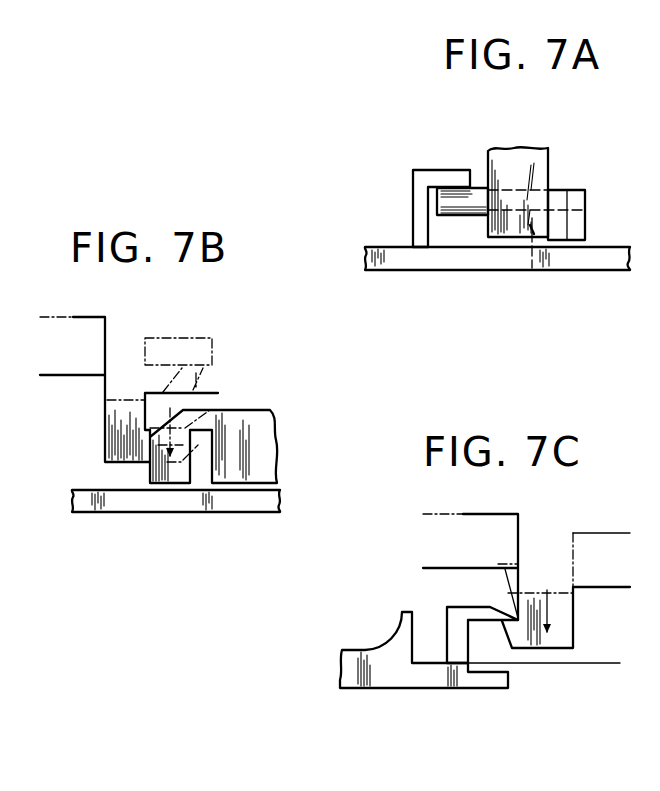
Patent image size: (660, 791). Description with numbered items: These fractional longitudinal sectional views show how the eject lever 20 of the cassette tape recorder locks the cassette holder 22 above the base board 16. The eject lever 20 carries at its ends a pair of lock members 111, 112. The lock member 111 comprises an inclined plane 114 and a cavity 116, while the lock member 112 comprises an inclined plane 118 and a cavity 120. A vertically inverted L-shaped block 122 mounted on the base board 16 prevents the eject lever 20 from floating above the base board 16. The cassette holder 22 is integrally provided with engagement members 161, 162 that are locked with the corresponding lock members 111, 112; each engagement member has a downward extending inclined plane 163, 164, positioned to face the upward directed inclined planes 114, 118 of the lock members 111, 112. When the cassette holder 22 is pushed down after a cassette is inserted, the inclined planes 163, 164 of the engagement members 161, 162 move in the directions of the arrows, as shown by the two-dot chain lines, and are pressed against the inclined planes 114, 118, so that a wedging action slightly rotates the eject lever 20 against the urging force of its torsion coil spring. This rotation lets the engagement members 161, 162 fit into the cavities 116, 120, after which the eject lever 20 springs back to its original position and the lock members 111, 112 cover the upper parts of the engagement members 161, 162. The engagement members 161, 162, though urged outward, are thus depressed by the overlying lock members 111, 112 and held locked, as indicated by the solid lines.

In FIG. 7A, the base board 16 is at (574, 272).
In FIG. 7B, the base board 16 is at (176, 515).
In FIG. 7C, the base board 16 is at (429, 694).
In FIG. 7A, the eject lever 20 is at (588, 217).
In FIG. 7B, the eject lever 20 is at (276, 454).
In FIG. 7A, the cassette holder 22 is at (510, 148).
In FIG. 7B, the cassette holder 22 is at (132, 358).
In FIG. 7C, the cassette holder 22 is at (557, 567).
In FIG. 7A, the lock member 111 is at (567, 194).
In FIG. 7B, the lock member 111 is at (226, 407).
In FIG. 7C, the lock member 112 is at (424, 599).
In FIG. 7A, the inclined plane 114 is at (454, 198).
In FIG. 7B, the inclined plane 114 is at (163, 431).
In FIG. 7A, the cavity 116 is at (480, 241).
In FIG. 7C, the inclined plane 118 is at (504, 612).
In FIG. 7C, the cavity 120 is at (456, 618).
In FIG. 7A, the vertically inverted L-shaped block 122 is at (430, 175).
In FIG. 7A, the engagement member 161 is at (536, 270).
In FIG. 7B, the engagement member 161 is at (164, 362).
In FIG. 7C, the engagement member 162 is at (578, 580).
In FIG. 7B, the inclined plane 163 is at (197, 372).
In FIG. 7C, the inclined plane 164 is at (507, 586).